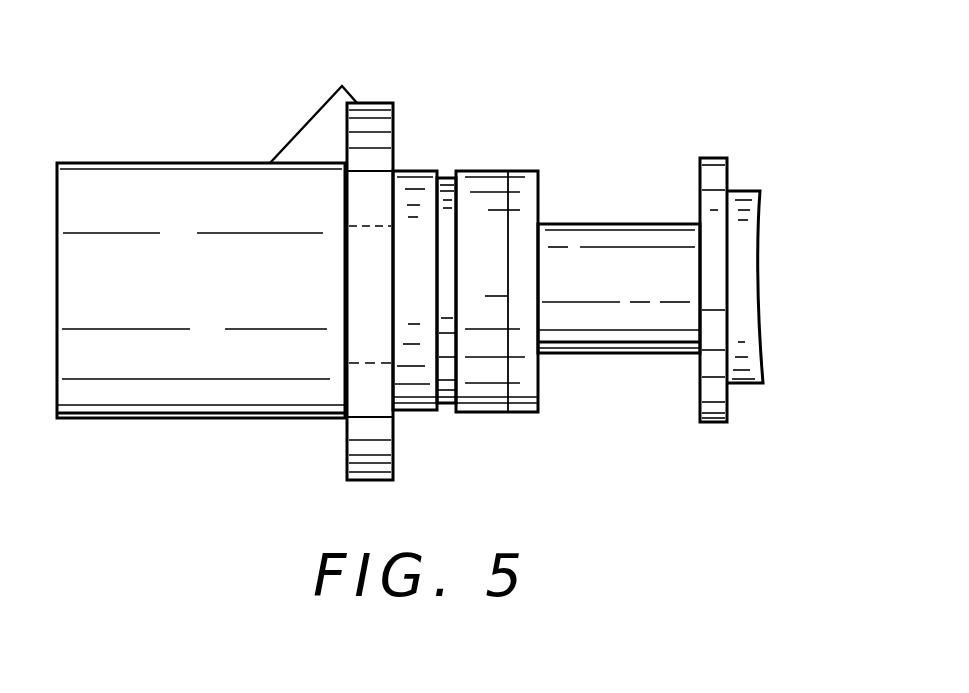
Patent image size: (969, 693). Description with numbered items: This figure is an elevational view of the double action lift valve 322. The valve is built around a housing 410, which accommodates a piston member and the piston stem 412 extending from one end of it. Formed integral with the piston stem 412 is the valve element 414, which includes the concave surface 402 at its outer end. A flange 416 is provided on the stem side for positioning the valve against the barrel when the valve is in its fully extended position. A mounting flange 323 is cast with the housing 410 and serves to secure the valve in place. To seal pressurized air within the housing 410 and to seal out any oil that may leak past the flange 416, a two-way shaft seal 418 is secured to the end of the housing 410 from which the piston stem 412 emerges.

The double action lift valve 322 is at (165, 162).
The mounting flange 323 is at (397, 125).
The housing 410 is at (167, 419).
The piston stem 412 is at (637, 356).
The valve element 414 is at (747, 190).
The flange 416 is at (730, 176).
The two-way shaft seal 418 is at (540, 187).
The concave surface 402 is at (760, 242).